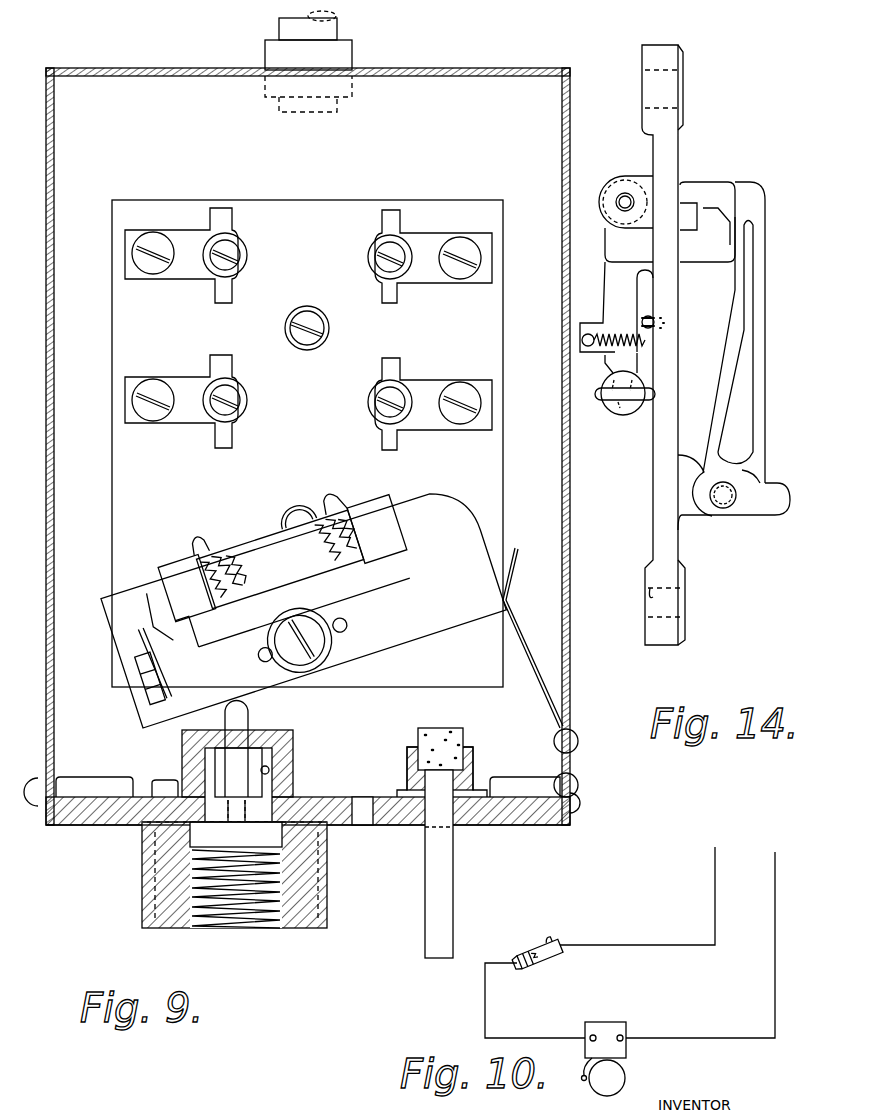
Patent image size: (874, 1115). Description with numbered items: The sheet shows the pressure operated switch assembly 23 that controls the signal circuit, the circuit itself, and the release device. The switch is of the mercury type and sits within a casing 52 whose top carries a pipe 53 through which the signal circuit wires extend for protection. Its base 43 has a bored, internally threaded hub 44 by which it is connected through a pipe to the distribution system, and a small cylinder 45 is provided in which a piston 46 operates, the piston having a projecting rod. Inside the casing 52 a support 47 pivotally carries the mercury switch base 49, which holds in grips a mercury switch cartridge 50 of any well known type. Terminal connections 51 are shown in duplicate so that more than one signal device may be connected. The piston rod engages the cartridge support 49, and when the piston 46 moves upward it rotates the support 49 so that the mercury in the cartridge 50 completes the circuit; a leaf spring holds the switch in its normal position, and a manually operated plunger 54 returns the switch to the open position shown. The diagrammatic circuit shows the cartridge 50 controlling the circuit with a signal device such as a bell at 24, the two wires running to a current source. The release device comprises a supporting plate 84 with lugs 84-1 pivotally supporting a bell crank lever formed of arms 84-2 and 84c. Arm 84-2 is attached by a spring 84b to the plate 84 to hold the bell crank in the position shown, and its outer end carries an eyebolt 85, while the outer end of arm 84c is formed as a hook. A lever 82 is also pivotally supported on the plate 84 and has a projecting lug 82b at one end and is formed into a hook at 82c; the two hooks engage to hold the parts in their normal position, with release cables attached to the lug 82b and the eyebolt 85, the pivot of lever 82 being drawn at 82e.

In FIG. 9, the fuse box assembly 23 is at (152, 54).
In FIG. 10, the signal device 24 is at (610, 1030).
In FIG. 9, the base 43 is at (90, 824).
In FIG. 9, the bored internally threaded hub 44 is at (308, 888).
In FIG. 9, the small cylinder 45 is at (270, 770).
In FIG. 9, the piston 46 is at (220, 812).
In FIG. 9, the support 47 is at (492, 488).
In FIG. 9, the mercury switch base 49 is at (299, 590).
In FIG. 10, the mercury switch cartridge 50 is at (548, 958).
In FIG. 9, the terminal connections 51 is at (170, 272).
In FIG. 9, the casing 52 is at (52, 448).
In FIG. 9, the pipe 53 is at (336, 14).
In FIG. 9, the manually operated plunger 54 is at (448, 860).
In FIG. 14, the lever 82 is at (740, 392).
In FIG. 14, the projecting lug 82b is at (778, 505).
In FIG. 14, the hook 82c is at (714, 188).
In FIG. 14, the pivot of spring arm 82e is at (703, 515).
In FIG. 14, the supporting plate 84 is at (676, 138).
In FIG. 14, the lugs 84-1 is at (626, 178).
In FIG. 14, the arm 84-2 is at (624, 284).
In FIG. 14, the spring 84b is at (650, 352).
In FIG. 14, the arm 84c is at (717, 240).
In FIG. 14, the eyebolt 85 is at (608, 405).